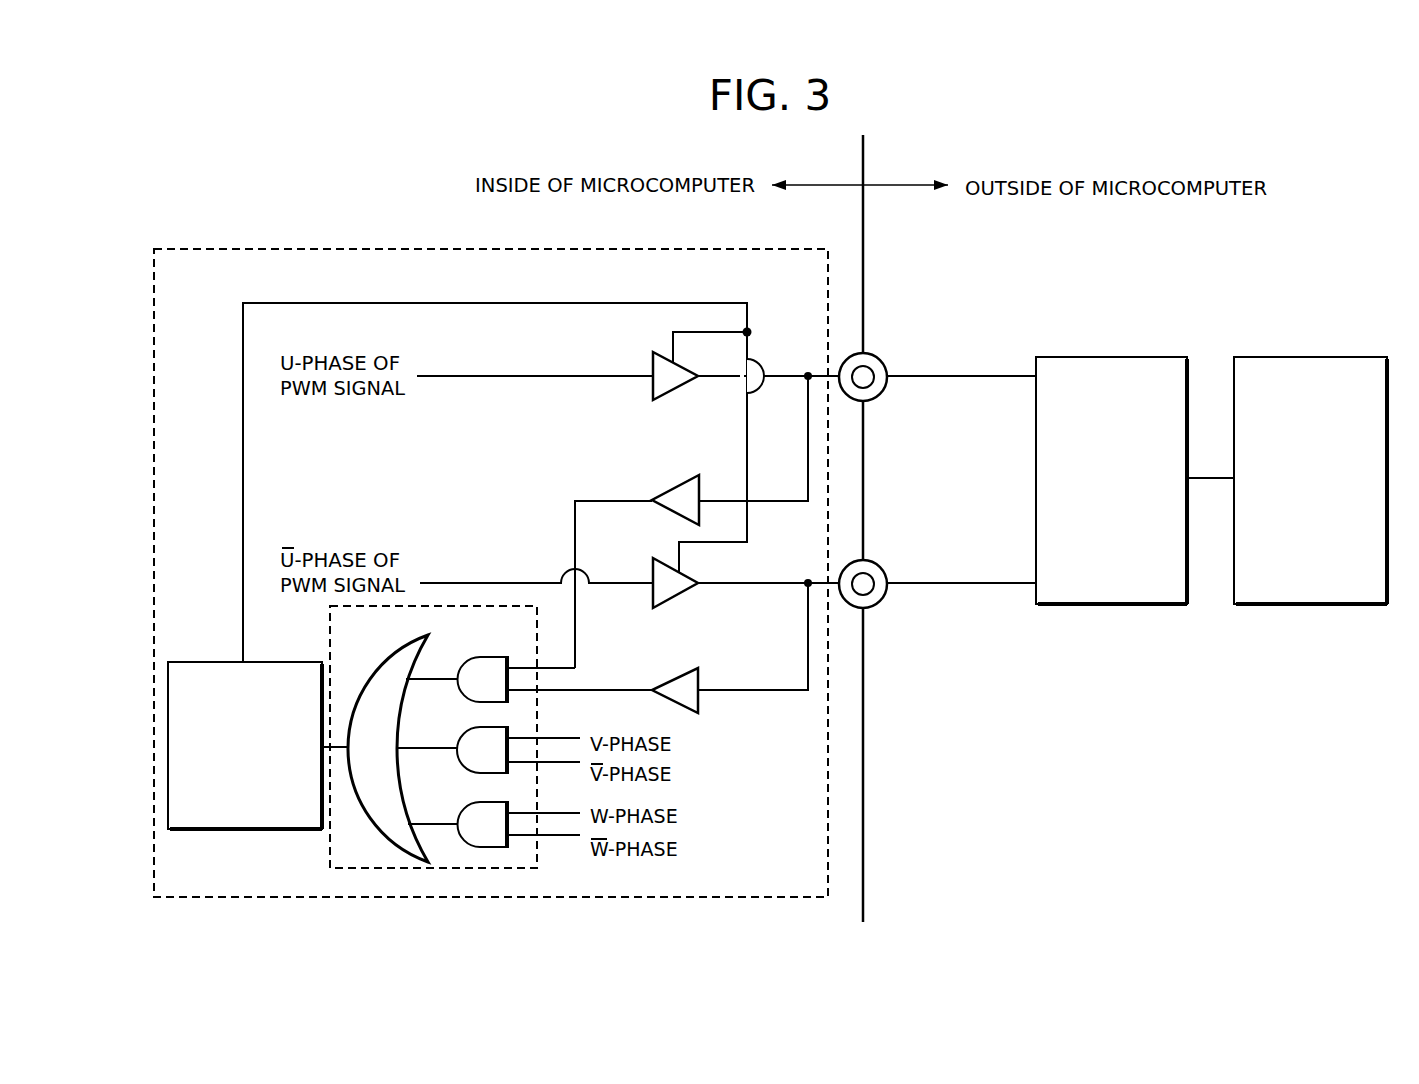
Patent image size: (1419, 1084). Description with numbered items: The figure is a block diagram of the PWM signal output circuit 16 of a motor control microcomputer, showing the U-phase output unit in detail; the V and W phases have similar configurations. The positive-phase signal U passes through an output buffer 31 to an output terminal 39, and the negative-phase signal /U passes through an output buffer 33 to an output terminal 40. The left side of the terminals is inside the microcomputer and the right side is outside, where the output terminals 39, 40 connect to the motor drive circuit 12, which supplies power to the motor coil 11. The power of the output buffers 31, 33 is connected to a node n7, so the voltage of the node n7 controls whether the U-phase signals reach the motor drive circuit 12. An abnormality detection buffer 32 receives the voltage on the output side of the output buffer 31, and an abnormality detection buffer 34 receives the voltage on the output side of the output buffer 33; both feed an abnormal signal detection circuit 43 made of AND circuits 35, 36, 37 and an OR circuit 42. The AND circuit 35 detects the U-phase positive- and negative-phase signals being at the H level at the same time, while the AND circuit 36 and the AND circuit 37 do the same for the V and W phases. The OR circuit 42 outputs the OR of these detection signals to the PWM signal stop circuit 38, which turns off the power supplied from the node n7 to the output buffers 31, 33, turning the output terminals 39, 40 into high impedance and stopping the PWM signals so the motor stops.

The motor coil 11 is at (1322, 357).
The motor drive circuit 12 is at (1115, 357).
The PWM signal output circuit 16 is at (531, 897).
The output buffer 31 is at (678, 393).
The abnormality detection buffer 32 is at (676, 483).
The output buffer 33 is at (678, 600).
The abnormality detection buffer 34 is at (700, 705).
The AND circuit 35 is at (480, 657).
The AND circuit 36 is at (470, 731).
The AND circuit 37 is at (470, 806).
The PWM signal stop circuit 38 is at (268, 662).
The output terminal 39 is at (878, 358).
The output terminal 40 is at (878, 565).
The OR circuit 42 is at (390, 645).
The abnormal signal detection circuit 43 is at (540, 850).
The node n7 is at (752, 330).